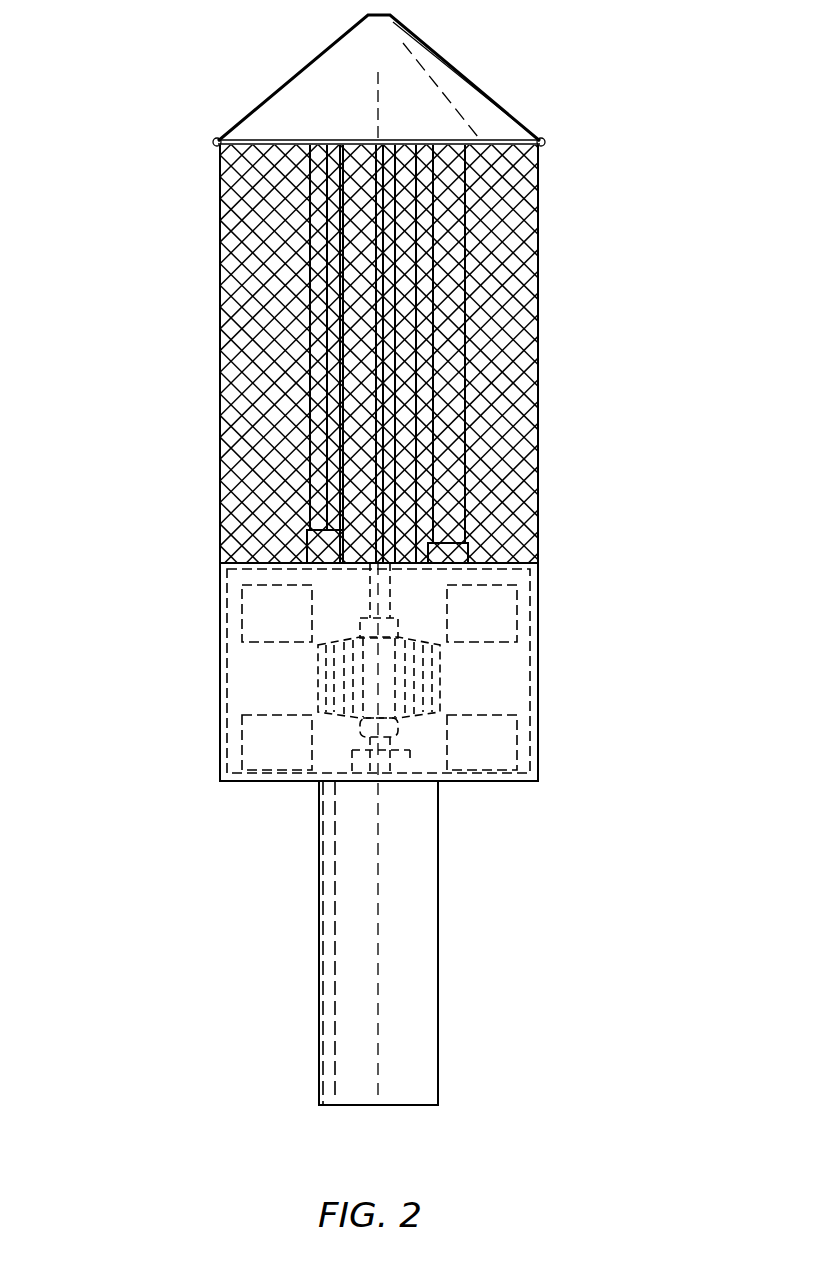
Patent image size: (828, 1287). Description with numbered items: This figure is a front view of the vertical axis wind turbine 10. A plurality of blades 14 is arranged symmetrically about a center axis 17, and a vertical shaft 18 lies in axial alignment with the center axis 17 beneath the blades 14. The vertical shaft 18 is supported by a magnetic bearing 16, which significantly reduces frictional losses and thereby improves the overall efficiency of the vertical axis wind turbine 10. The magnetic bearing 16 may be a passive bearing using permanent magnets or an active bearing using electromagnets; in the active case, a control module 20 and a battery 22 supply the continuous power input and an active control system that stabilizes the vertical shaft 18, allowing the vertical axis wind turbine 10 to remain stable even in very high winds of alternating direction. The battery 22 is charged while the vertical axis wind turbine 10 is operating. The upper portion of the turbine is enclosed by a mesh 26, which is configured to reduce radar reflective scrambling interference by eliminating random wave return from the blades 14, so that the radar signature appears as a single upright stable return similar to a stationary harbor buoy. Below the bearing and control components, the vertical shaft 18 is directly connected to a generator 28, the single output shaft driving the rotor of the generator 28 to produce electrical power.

The vertical axis wind turbine 10 is at (563, 108).
The blades 14 is at (467, 345).
The magnetic bearing 16 is at (362, 748).
The center axis 17 is at (378, 103).
The vertical shaft 18 is at (370, 608).
The control module 20 is at (218, 117).
The battery 22 is at (517, 723).
The mesh 26 is at (538, 210).
The generator 28 is at (318, 672).